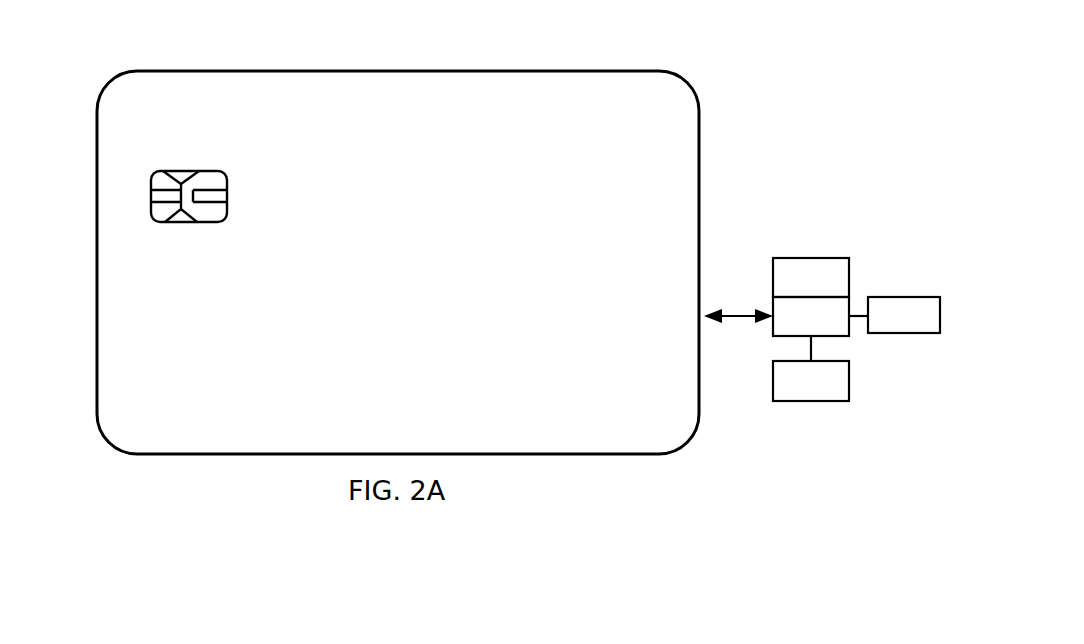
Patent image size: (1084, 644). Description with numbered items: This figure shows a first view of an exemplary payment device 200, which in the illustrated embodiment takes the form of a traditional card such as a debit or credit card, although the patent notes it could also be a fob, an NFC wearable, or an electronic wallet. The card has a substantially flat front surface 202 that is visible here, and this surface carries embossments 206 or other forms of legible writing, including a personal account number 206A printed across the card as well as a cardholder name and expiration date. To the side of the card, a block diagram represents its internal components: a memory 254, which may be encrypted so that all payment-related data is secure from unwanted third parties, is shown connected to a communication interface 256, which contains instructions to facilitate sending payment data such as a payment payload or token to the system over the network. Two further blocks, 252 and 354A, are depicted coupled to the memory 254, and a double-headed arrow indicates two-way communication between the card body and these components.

The payment device 200 is at (196, 71).
The front surface 202 is at (680, 181).
The personal account number (PAN) 206A is at (117, 311).
The embossments 206 is at (596, 377).
The processor 252 is at (811, 277).
The memory 254 is at (811, 316).
The communication interface 256 is at (811, 368).
The antenna / interface 354A is at (894, 315).